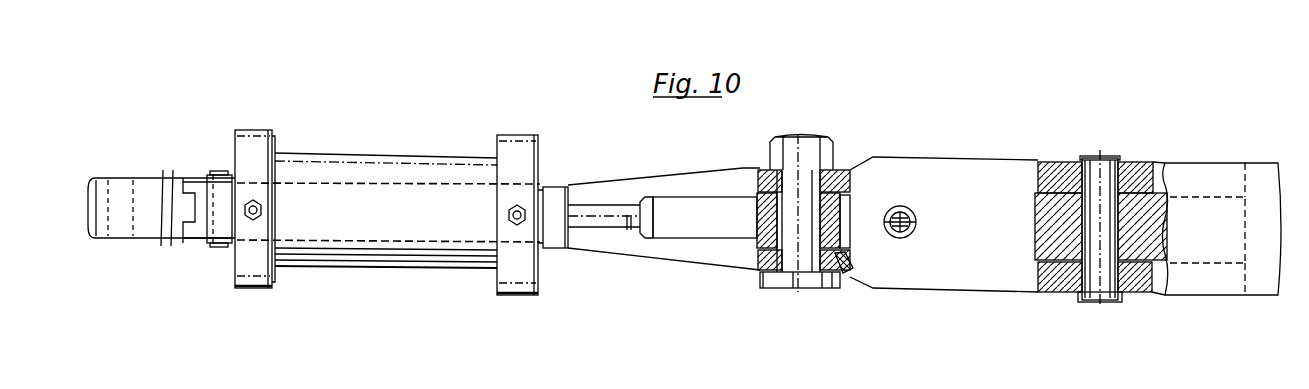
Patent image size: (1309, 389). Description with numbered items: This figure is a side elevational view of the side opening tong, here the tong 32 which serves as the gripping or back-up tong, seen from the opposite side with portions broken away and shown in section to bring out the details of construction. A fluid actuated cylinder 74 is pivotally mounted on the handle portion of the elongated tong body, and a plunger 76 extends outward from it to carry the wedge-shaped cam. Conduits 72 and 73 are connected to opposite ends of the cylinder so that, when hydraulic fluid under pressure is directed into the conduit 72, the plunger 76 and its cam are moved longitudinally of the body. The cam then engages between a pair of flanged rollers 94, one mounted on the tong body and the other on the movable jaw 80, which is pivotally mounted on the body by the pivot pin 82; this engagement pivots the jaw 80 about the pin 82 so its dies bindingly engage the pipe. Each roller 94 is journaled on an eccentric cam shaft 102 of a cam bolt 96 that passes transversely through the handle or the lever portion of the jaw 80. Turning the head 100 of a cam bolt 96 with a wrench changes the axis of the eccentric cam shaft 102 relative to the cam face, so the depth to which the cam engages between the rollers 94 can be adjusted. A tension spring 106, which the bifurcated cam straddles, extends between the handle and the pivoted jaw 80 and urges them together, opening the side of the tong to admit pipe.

The tong 32 is at (1173, 300).
The conduit 72 is at (262, 210).
The conduit 73 is at (528, 208).
The fluid actuated cylinder 74 is at (477, 168).
The plunger 76 is at (620, 220).
The movable jaw 80 is at (1227, 172).
The pivot pin 82 is at (1090, 157).
The roller 94 is at (757, 243).
The cam bolt 96 is at (770, 157).
The head 100 is at (812, 288).
The eccentric cam shaft 102 is at (803, 217).
The tension spring 106 is at (918, 229).